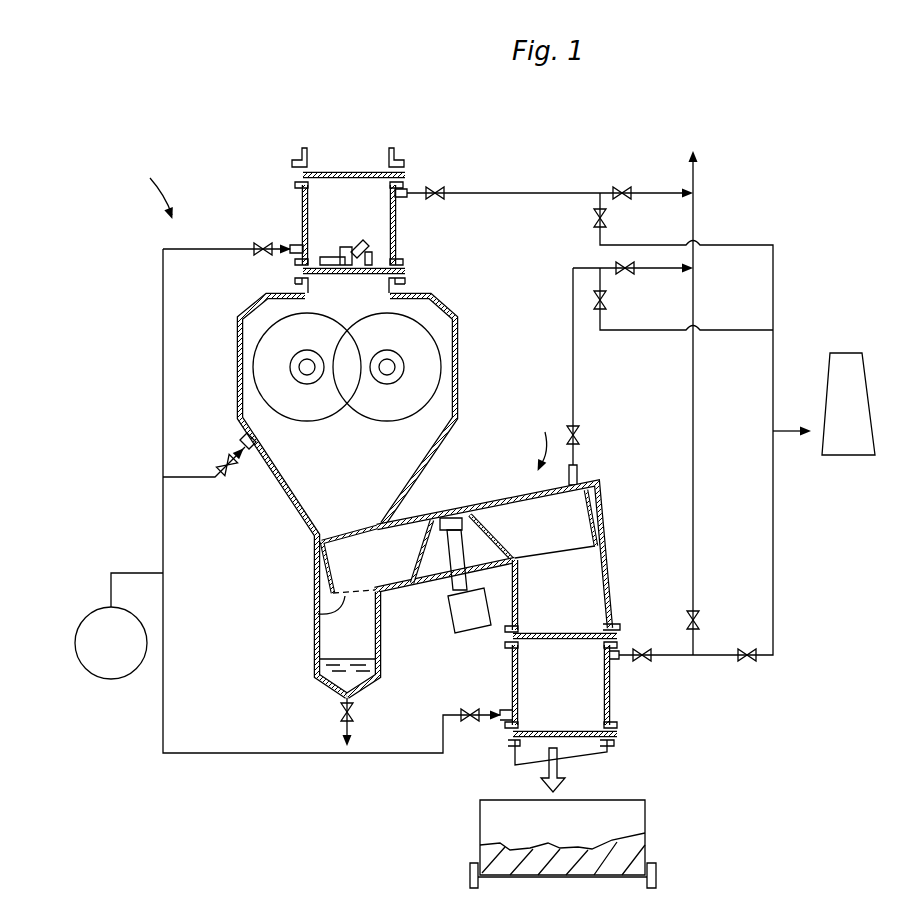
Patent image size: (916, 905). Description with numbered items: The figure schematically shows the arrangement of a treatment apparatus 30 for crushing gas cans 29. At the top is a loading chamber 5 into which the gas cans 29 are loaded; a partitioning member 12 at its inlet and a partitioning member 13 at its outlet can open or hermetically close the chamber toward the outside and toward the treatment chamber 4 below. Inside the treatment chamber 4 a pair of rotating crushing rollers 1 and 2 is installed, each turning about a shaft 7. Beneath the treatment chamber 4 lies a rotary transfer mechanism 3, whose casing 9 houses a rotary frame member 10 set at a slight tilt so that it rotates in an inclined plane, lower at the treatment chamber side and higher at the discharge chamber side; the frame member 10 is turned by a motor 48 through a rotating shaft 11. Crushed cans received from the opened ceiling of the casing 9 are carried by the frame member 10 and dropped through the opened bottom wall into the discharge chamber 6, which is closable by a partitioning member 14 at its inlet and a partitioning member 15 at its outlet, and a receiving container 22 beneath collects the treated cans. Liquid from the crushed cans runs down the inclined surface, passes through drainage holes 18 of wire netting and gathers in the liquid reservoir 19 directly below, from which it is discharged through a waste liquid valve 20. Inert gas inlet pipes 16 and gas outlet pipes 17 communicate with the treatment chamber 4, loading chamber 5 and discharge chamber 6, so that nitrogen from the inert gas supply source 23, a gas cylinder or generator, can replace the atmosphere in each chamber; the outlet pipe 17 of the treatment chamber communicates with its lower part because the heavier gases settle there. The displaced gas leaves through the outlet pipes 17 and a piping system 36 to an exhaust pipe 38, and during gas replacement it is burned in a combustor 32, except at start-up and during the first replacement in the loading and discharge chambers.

The rotating roller 1 is at (432, 372).
The rotating roller 2 is at (262, 355).
The transfer mechanism 3 is at (543, 438).
The treatment chamber 4 is at (440, 405).
The loading chamber 5 is at (320, 213).
The discharge chamber 6 is at (588, 712).
The roller shaft 7 is at (300, 372).
The casing 9 is at (598, 500).
The rotary frame member 10 is at (606, 522).
The rotating shaft 11 is at (455, 555).
The partitioning member 12 is at (398, 172).
The partitioning member 13 is at (300, 271).
The partitioning member 14 is at (605, 625).
The partitioning member 15 is at (520, 745).
The inert gas inlet pipe 16 is at (295, 243).
The gas outlet pipe 17 is at (407, 203).
The drainage holes 18 is at (332, 608).
The liquid reservoir 19 is at (335, 636).
The waste liquid valve 20 is at (338, 712).
The receiving container 22 is at (622, 822).
The inert gas supply source 23 is at (90, 627).
The gas can 29 is at (358, 238).
The treatment apparatus 30 is at (148, 182).
The combustor 32 is at (850, 410).
The gas line system 36 is at (775, 285).
The exhaust pipe 38 is at (695, 170).
The motor 48 is at (465, 618).